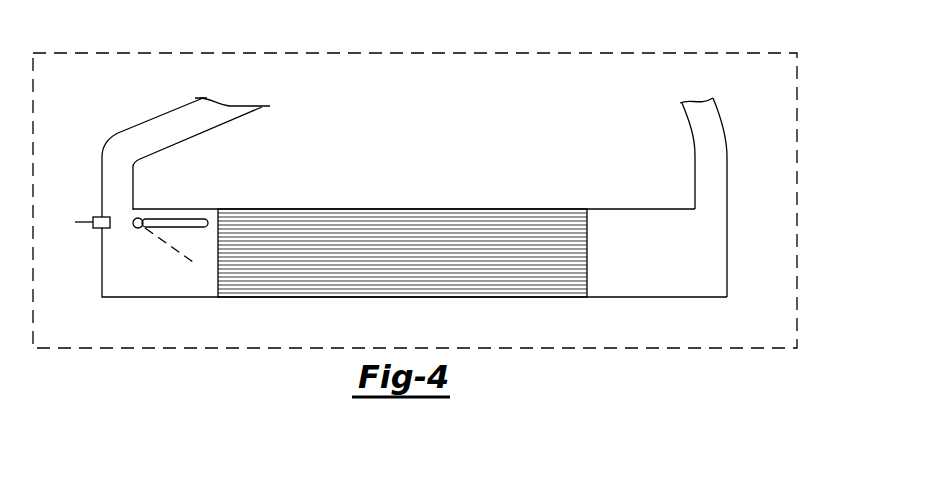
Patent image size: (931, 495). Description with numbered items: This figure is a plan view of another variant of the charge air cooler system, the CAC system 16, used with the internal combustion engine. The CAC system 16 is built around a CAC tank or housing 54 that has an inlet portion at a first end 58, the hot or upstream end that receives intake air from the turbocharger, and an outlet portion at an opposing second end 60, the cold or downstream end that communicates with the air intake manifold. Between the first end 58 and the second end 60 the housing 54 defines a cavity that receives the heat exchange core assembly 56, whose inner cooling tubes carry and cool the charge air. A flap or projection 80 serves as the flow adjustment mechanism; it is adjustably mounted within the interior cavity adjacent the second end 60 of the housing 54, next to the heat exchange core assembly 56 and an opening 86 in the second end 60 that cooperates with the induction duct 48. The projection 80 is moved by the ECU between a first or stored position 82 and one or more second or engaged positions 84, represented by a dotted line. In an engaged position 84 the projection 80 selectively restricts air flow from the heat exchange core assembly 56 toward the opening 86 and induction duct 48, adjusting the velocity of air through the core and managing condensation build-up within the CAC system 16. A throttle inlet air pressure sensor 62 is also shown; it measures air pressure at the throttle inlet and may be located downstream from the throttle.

The CAC system 16 is at (701, 50).
The induction duct 48 is at (223, 112).
The CAC tank or housing 54 is at (636, 304).
The heat exchange core assembly 56 is at (463, 220).
The first end 58 is at (727, 245).
The second end 60 is at (102, 280).
The throttle inlet air pressure (TIAP) sensor 62 is at (93, 228).
The flap or projection 80 is at (200, 210).
The first or stored position 82 is at (170, 218).
The second or engaged position 84 is at (180, 252).
The opening 86 is at (115, 198).